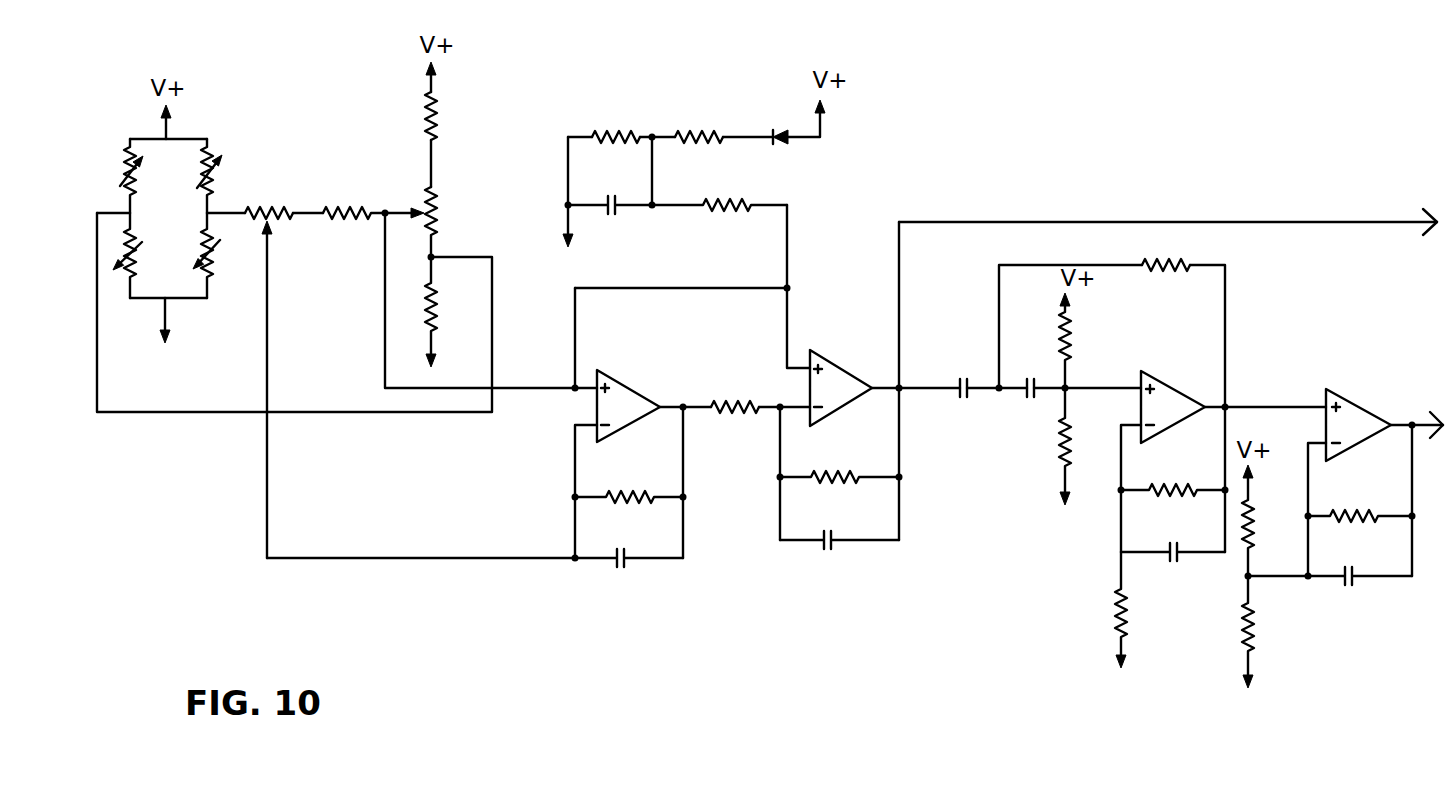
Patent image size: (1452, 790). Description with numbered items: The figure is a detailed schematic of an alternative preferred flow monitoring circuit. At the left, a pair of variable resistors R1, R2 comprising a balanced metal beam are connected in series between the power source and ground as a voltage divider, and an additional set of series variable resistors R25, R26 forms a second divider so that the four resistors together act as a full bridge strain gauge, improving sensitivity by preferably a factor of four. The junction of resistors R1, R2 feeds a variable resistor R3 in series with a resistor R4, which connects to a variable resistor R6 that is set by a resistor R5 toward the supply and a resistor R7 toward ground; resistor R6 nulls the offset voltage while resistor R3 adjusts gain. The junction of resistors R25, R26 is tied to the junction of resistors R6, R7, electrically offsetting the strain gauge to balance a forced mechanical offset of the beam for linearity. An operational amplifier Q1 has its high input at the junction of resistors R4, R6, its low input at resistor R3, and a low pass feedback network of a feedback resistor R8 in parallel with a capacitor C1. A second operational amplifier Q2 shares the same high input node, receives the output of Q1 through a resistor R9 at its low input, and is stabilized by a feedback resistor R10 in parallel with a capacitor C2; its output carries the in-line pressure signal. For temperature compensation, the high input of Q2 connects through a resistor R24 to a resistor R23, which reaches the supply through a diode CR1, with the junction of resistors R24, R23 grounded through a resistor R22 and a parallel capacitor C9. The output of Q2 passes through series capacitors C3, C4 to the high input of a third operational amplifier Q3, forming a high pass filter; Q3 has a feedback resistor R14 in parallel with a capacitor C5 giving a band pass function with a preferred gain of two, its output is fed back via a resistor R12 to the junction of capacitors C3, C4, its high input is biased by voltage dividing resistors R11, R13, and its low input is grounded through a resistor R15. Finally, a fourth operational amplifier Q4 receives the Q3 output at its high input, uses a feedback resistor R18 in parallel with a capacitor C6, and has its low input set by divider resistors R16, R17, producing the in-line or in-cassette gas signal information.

The variable resistor R25 is at (104, 176).
The variable resistor R1 is at (226, 176).
The variable resistor R26 is at (150, 255).
The variable resistor R2 is at (220, 255).
The variable resistor R3 is at (269, 198).
The resistor R4 is at (367, 198).
The resistor R5 is at (451, 116).
The variable resistor R6 is at (451, 222).
The resistor R7 is at (449, 312).
The resistor R22 is at (615, 121).
The resistor R23 is at (699, 121).
The diode CR1 is at (786, 155).
The capacitor C9 is at (610, 225).
The resistor R24 is at (719, 224).
The operational amplifier Q1 is at (628, 399).
The resistor R9 is at (735, 392).
The feedback resistor R8 is at (629, 484).
The capacitor C1 is at (629, 543).
The operational amplifier Q2 is at (843, 382).
The feedback resistor R10 is at (839, 462).
The capacitor C2 is at (839, 526).
The capacitor C3 is at (964, 406).
The capacitor C4 is at (1031, 406).
The resistor R12 is at (1166, 250).
The resistor R11 is at (1088, 340).
The resistor R13 is at (1041, 446).
The operational amplifier Q3 is at (1173, 401).
The feedback resistor R14 is at (1173, 474).
The capacitor C5 is at (1173, 537).
The resistor R15 is at (1093, 610).
The operational amplifier Q4 is at (1360, 420).
The feedback resistor R18 is at (1360, 500).
The capacitor C6 is at (1330, 561).
The resistor R16 is at (1274, 520).
The resistor R17 is at (1276, 632).